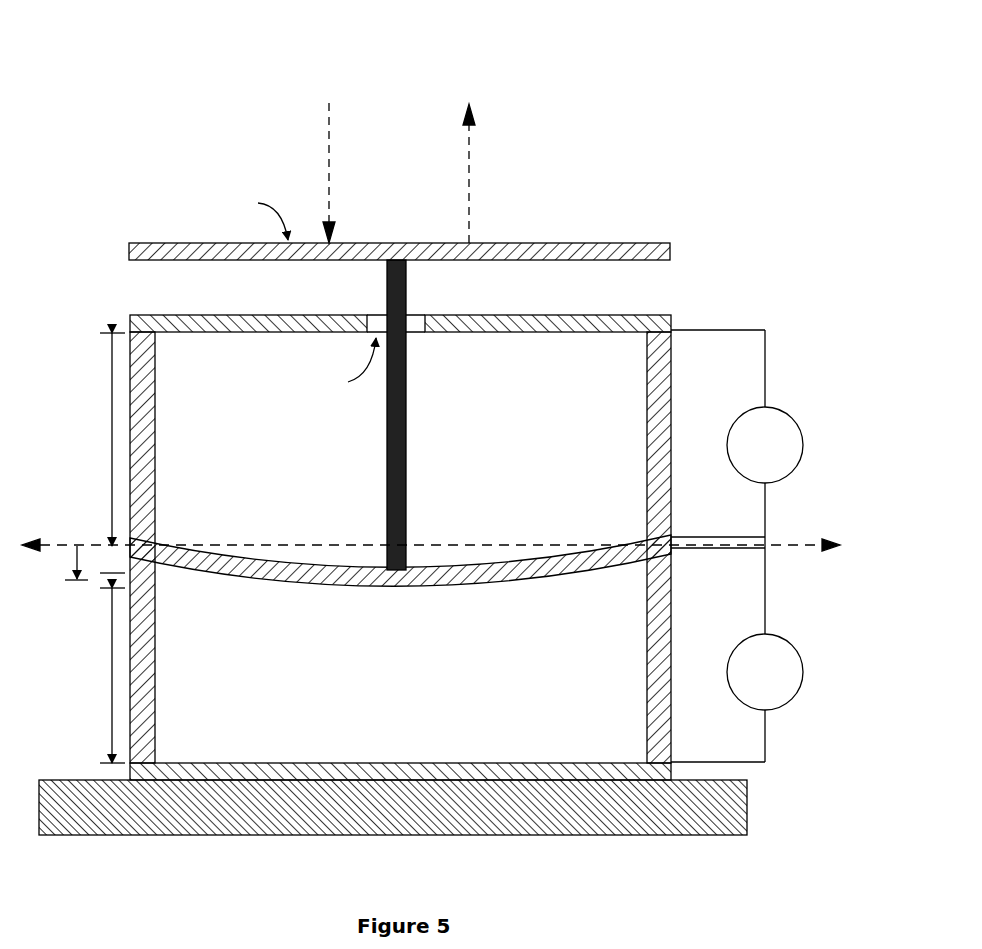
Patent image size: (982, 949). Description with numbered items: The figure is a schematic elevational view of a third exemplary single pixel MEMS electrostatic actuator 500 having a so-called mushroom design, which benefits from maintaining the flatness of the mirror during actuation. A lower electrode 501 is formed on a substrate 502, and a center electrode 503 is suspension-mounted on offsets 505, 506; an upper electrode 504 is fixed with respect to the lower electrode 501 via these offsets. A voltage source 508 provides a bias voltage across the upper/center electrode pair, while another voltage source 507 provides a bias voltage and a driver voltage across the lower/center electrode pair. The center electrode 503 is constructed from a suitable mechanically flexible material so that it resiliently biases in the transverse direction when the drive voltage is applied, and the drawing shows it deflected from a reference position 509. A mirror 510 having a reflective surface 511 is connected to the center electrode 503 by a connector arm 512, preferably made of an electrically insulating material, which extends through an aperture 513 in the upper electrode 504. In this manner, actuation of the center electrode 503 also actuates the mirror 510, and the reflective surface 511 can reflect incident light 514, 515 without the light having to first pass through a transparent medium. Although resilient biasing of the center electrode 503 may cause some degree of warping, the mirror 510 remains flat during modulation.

The actuator 500 is at (188, 65).
The lower electrode 501 is at (272, 762).
The substrate 502 is at (640, 835).
The center electrode 503 is at (291, 587).
The upper electrode 504 is at (612, 333).
The offset 505 is at (157, 676).
The offset 506 is at (647, 636).
The voltage source 507 is at (792, 700).
The voltage source 508 is at (796, 470).
The membrane neutral position line 509 is at (795, 547).
The mirror 510 is at (626, 243).
The reflective surface 511 is at (252, 217).
The connector arm 512 is at (407, 455).
The aperture 513 is at (340, 368).
The incident light 514 is at (327, 172).
The incident light 515 is at (470, 175).